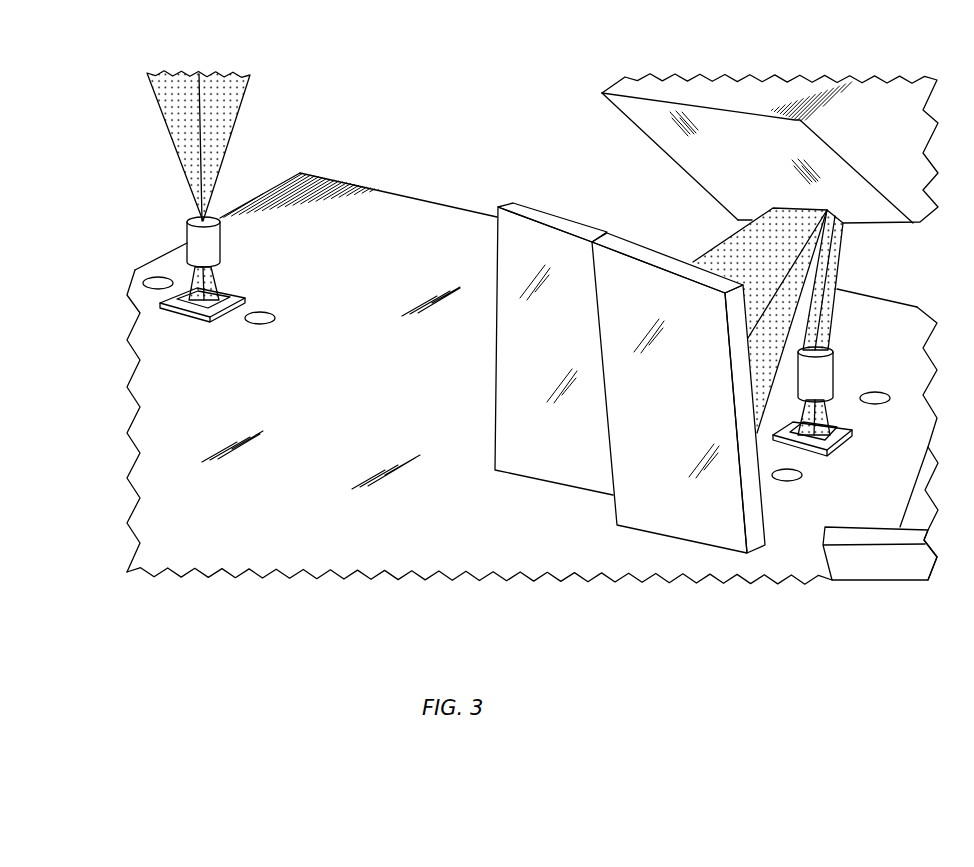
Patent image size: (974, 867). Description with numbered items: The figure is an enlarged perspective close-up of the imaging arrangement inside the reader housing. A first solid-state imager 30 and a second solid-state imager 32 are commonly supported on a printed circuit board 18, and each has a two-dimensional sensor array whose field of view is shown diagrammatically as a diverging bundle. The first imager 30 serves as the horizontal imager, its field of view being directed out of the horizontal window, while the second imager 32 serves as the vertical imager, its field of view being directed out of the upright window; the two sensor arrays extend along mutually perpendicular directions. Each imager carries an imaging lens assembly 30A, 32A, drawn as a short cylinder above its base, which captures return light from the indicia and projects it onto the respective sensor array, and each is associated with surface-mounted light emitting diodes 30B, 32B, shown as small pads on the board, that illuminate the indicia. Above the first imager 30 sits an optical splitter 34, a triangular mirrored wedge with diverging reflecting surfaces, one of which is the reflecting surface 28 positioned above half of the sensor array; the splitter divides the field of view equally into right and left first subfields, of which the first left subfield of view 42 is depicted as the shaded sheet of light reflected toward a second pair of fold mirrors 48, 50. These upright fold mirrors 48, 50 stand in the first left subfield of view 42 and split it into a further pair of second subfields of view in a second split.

The printed circuit board 18 is at (380, 192).
The reflecting surface 28 is at (670, 157).
The first solid-state imager 30 is at (834, 394).
The imaging lens assembly 30A is at (837, 348).
The light emitting diodes 30B is at (876, 398).
The second solid-state imager 32 is at (236, 197).
The imaging lens assembly 32A is at (221, 241).
The light emitting diodes 32B is at (159, 283).
The optical splitter 34 is at (770, 127).
The first left subfield of view 42 is at (733, 233).
The fold mirror 48 is at (543, 460).
The fold mirror 50 is at (658, 517).